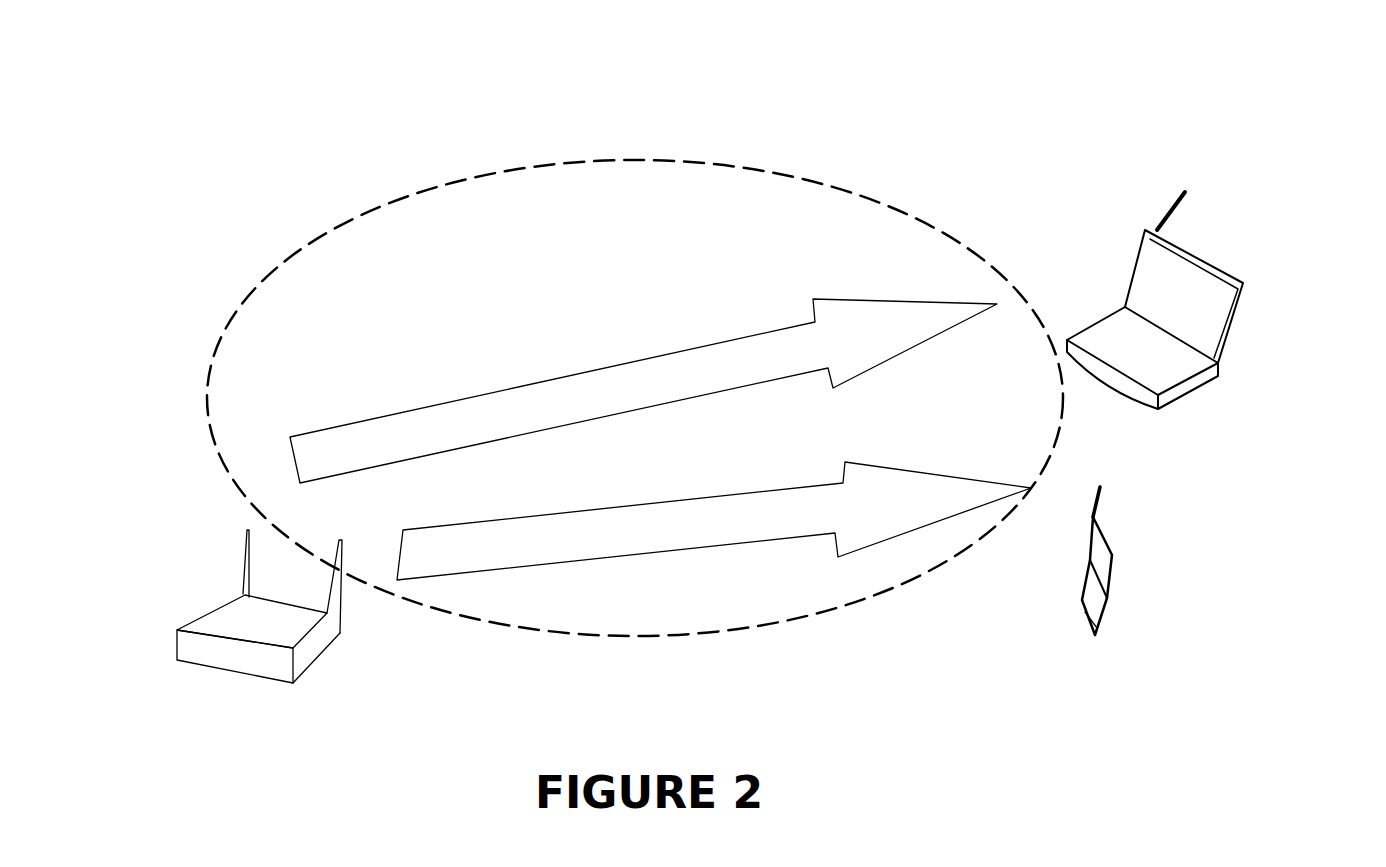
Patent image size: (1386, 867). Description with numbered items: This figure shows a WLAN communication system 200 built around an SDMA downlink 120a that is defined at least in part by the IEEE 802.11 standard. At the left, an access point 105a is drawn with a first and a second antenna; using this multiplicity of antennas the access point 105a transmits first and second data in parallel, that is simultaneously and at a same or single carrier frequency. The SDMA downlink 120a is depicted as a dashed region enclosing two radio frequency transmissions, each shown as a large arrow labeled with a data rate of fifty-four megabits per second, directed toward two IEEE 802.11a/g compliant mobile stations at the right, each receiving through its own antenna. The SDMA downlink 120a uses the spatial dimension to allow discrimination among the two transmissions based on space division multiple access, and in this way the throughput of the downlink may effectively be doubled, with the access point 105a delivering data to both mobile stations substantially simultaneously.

The WLAN communication system 200 is at (128, 190).
The SDMA downlink 120a is at (595, 160).
The access point 105a is at (177, 625).